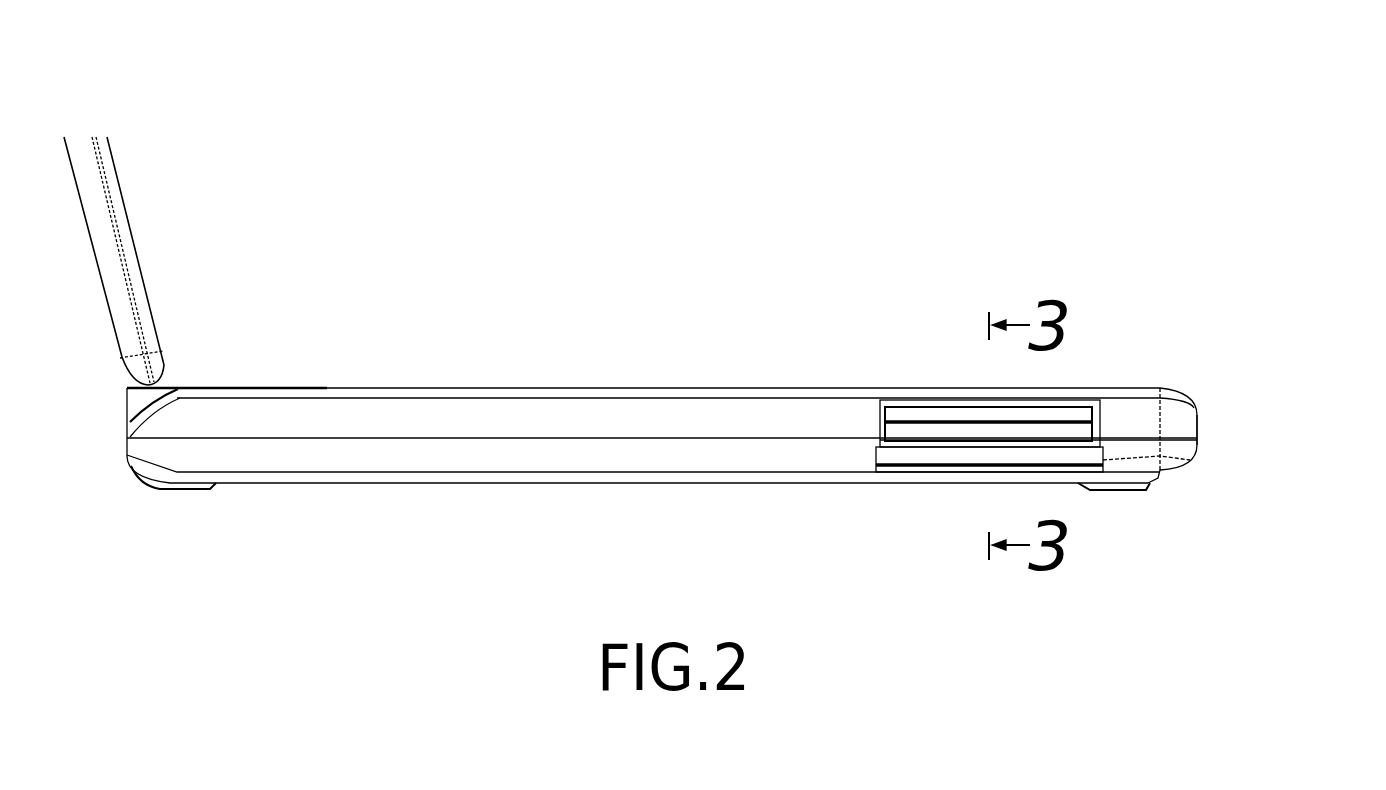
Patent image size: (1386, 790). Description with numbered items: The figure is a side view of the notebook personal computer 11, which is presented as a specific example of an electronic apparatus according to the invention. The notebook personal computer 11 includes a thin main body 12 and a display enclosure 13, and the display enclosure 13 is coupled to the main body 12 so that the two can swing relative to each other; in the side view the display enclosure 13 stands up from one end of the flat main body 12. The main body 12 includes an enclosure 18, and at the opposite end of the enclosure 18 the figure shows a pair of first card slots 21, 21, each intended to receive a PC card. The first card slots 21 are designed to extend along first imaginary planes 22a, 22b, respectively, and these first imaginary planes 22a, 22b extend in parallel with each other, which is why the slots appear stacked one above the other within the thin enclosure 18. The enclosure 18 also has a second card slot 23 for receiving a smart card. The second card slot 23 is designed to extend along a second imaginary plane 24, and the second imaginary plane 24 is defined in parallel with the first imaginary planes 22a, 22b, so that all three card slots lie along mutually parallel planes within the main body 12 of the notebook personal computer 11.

The notebook personal computer 11 is at (506, 215).
The main body 12 is at (642, 378).
The display enclosure 13 is at (146, 234).
The enclosure 18 is at (1187, 396).
The first card slot 21 is at (882, 413).
The first imaginary plane 22a is at (1197, 438).
The first imaginary plane 22b is at (1197, 420).
The second card slot 23 is at (876, 471).
The second imaginary plane 24 is at (1190, 463).